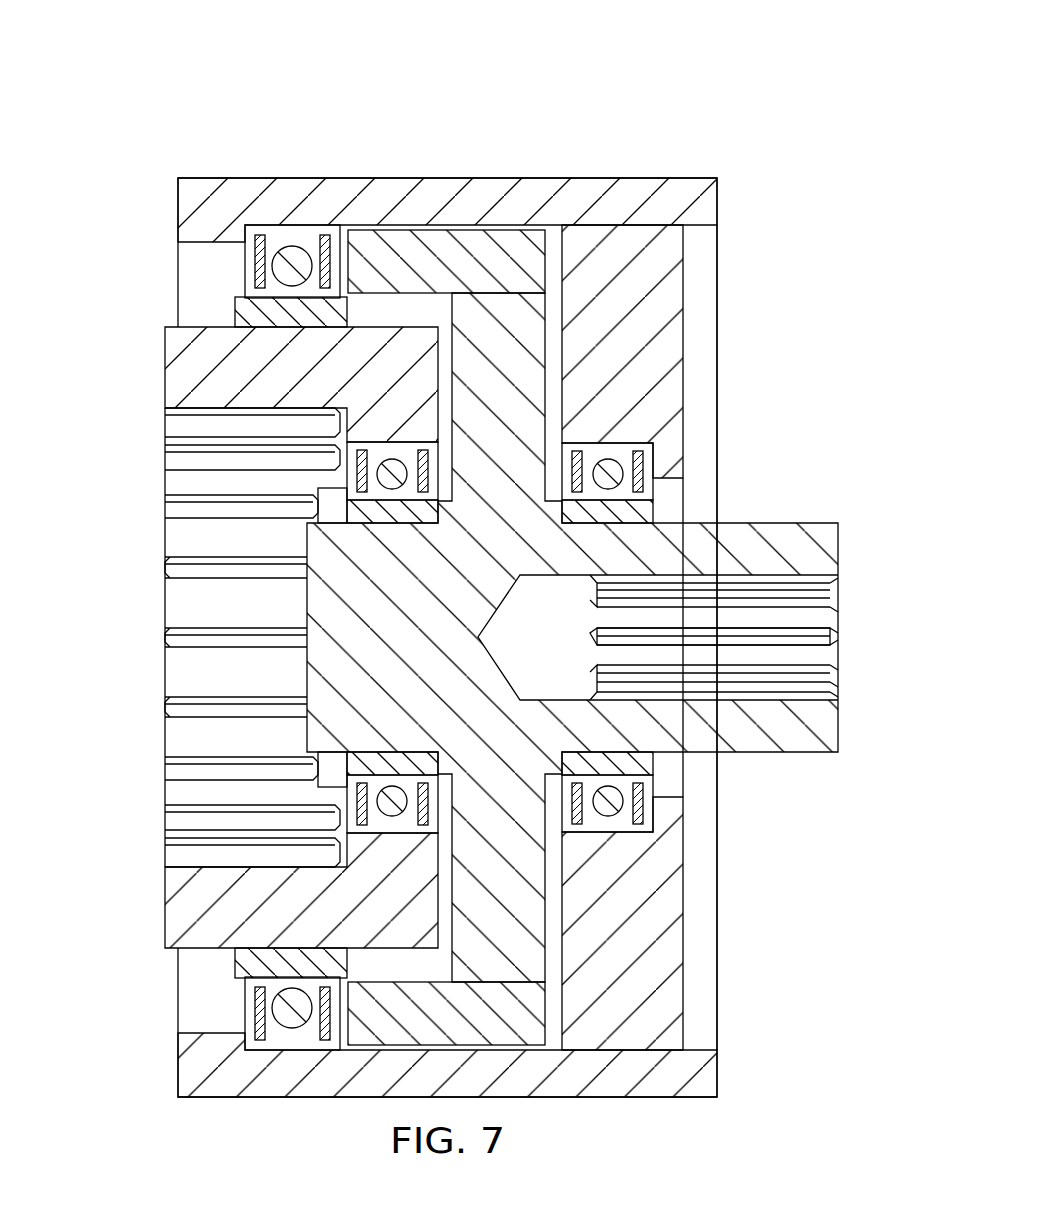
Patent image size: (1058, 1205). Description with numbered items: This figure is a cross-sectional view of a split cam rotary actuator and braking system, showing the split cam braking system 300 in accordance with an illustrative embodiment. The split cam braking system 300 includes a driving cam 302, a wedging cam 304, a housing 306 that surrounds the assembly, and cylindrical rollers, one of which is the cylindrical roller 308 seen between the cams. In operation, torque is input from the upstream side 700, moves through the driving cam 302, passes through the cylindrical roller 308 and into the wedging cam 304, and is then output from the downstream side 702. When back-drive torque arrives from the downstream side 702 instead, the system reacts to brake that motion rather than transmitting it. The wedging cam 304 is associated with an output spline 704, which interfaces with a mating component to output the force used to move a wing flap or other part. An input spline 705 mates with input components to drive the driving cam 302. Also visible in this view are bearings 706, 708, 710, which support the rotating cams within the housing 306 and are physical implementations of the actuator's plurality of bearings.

The split cam braking system 300 is at (228, 82).
The driving cam 302 is at (315, 686).
The wedging cam 304 is at (170, 382).
The housing 306 is at (636, 187).
The cylindrical roller 308 is at (400, 237).
The upstream side 700 is at (878, 613).
The downstream side 702 is at (128, 545).
The output spline 704 is at (200, 792).
The input spline 705 is at (808, 655).
The bearing 706 is at (278, 268).
The bearing 708 is at (610, 466).
The bearing 710 is at (395, 466).